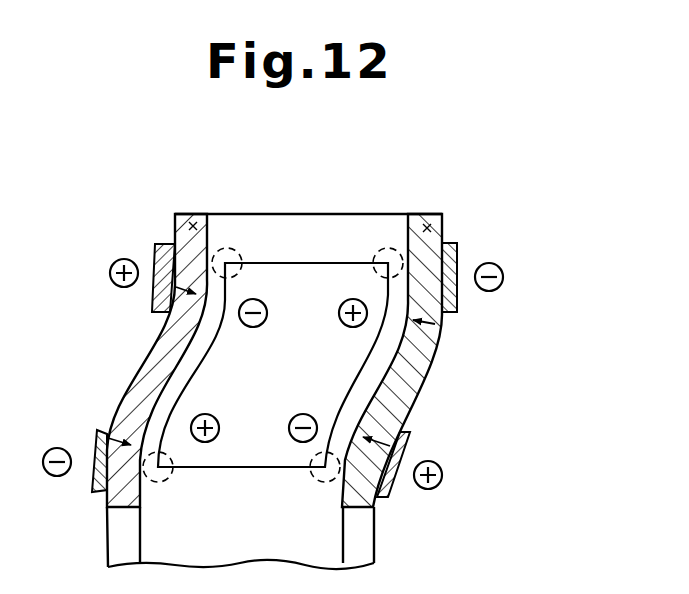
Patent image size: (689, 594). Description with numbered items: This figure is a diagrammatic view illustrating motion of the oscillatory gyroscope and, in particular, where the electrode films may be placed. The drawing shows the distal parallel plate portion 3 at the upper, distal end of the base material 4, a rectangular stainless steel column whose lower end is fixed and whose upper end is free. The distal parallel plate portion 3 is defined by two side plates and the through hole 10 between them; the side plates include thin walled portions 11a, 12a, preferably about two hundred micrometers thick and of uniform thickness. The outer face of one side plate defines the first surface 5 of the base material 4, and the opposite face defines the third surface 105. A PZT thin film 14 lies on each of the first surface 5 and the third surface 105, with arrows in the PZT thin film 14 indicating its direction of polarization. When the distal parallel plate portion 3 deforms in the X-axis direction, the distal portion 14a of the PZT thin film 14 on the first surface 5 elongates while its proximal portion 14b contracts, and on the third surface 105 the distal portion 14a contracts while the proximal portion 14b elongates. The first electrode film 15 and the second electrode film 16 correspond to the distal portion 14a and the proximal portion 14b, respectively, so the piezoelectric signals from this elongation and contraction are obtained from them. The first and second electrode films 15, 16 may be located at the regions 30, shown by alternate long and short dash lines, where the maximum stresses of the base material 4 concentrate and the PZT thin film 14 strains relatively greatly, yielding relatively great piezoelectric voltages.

The distal parallel plate portion 3 is at (581, 247).
The base material 4 is at (305, 214).
The first surface 5 is at (418, 353).
The through hole 10 is at (356, 386).
The thin walled portion 11a is at (380, 344).
The thin walled portion 12a is at (205, 352).
The PZT thin film 14 is at (294, 340).
The distal portion of the PZT thin film 14a is at (194, 226).
The proximal portion of the PZT thin film 14b is at (117, 503).
The first electrode film 15 is at (458, 247).
The second electrode film 16 is at (157, 245).
The regions 30 is at (232, 249).
The third surface 105 is at (190, 338).